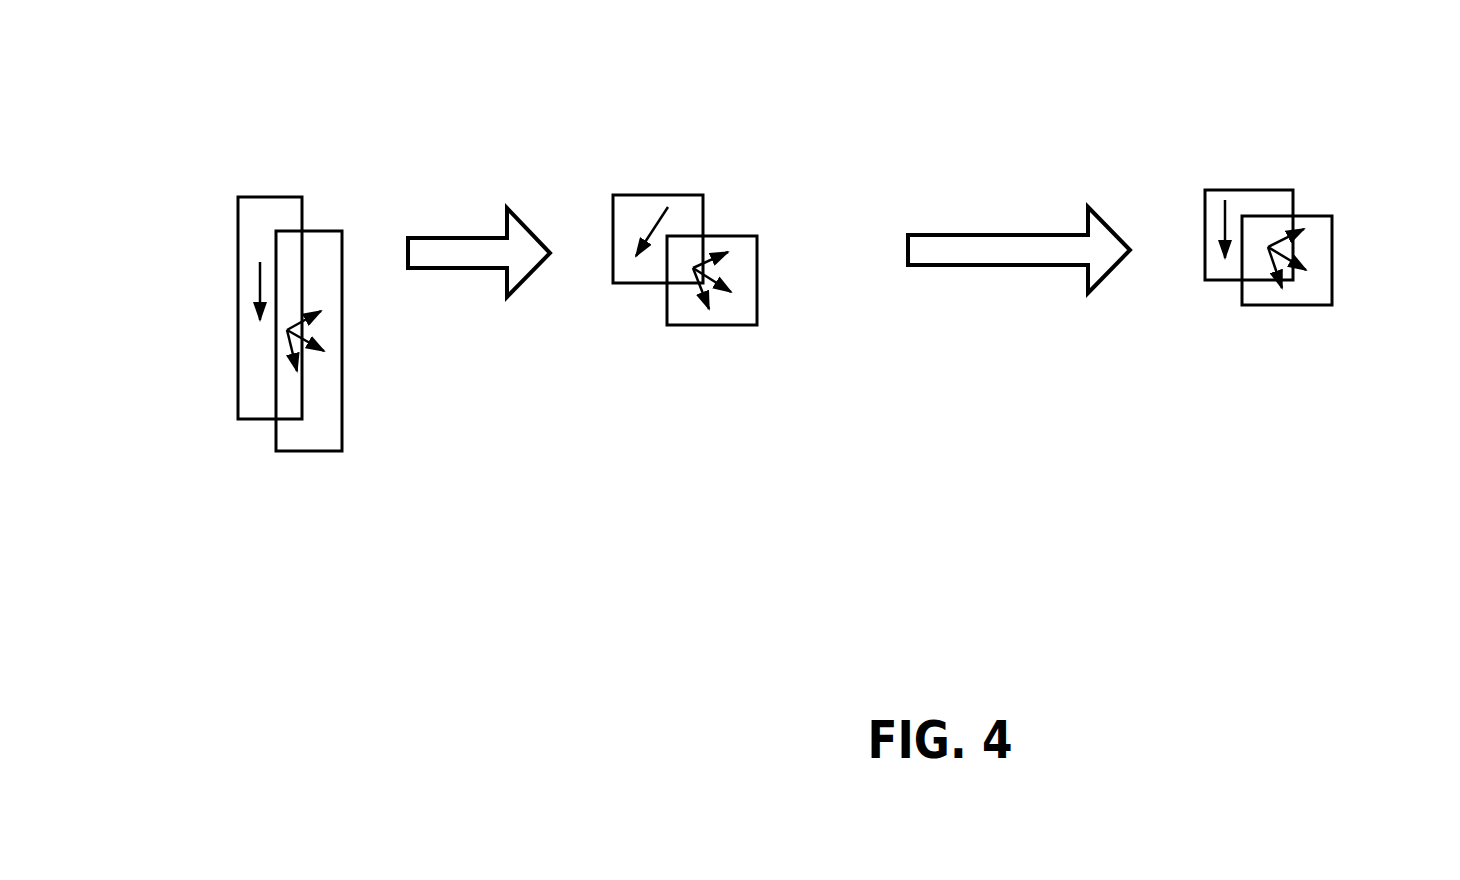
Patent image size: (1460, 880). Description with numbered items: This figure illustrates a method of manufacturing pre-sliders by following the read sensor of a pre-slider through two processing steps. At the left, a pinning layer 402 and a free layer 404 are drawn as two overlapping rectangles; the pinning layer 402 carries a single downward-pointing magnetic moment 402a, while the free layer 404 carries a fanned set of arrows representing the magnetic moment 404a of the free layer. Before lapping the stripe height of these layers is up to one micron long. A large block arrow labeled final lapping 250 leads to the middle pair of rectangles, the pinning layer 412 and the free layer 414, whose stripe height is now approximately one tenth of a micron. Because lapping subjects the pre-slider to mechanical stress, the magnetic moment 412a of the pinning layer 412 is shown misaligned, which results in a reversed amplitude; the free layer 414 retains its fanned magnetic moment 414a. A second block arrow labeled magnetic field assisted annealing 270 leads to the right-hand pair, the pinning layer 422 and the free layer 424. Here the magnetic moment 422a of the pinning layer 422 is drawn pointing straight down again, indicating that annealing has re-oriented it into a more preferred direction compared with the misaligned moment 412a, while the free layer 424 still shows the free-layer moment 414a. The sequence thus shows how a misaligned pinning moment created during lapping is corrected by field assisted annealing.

The pinning layer 402 is at (258, 226).
The magnetic moment 402a is at (258, 287).
The free layer 404 is at (313, 262).
The free layer magnetization 404a is at (288, 330).
The final lapping 250 is at (471, 215).
The pinning layer 412 is at (657, 195).
The magnetic moment 412a is at (653, 232).
The free layer 414 is at (733, 327).
The magnetic moment 414a is at (693, 268).
The magnetic field assisted annealing 270 is at (1019, 197).
The pinning layer 422 is at (1245, 190).
The magnetic moment 422a is at (1227, 217).
The free layer 424 is at (1303, 307).